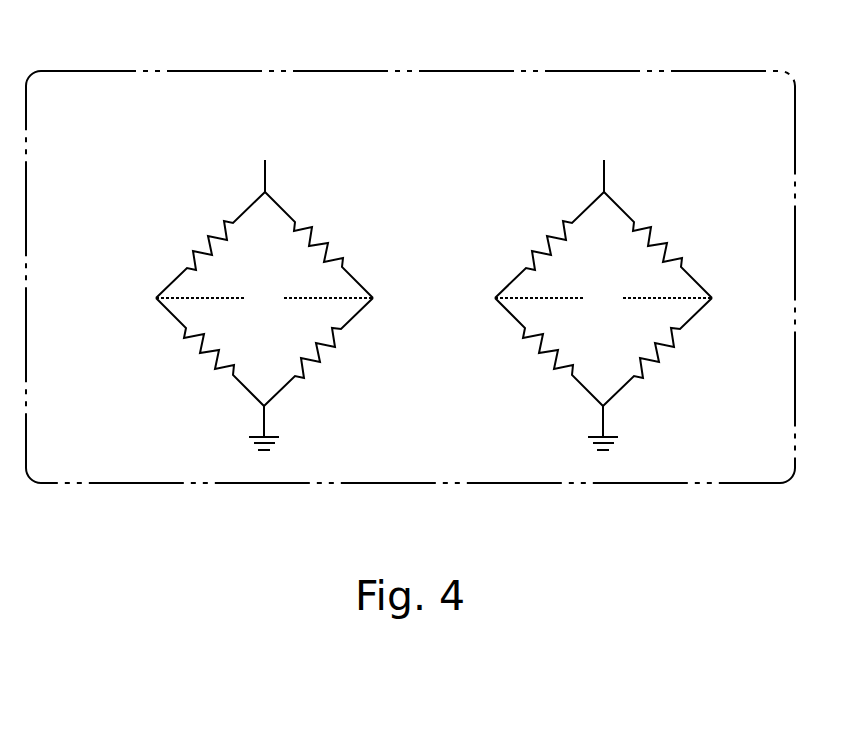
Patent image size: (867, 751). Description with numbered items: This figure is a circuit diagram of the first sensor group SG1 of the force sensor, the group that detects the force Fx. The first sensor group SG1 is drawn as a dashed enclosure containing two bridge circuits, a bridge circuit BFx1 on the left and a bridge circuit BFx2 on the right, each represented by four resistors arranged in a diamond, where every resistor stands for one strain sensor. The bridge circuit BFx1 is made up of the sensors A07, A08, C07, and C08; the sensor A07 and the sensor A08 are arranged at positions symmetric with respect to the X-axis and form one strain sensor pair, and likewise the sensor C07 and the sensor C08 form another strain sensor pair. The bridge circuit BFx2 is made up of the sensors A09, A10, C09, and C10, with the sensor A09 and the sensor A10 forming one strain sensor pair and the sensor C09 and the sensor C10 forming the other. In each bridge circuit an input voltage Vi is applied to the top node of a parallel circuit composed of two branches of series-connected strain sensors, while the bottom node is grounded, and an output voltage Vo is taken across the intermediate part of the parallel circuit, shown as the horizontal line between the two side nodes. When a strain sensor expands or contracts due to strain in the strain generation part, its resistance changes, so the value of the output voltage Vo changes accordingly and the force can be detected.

The first sensor group SG1 is at (140, 70).
The bridge circuit BFx1 is at (152, 157).
The bridge circuit BFx2 is at (525, 157).
The sensor A07 is at (203, 245).
The sensor C08 is at (320, 245).
The sensor C07 is at (203, 352).
The sensor A08 is at (320, 352).
The sensor A09 is at (543, 245).
The sensor C10 is at (660, 245).
The sensor C09 is at (543, 352).
The sensor A10 is at (660, 352).
The input voltage Vi is at (434, 157).
The output voltage Vo is at (434, 297).